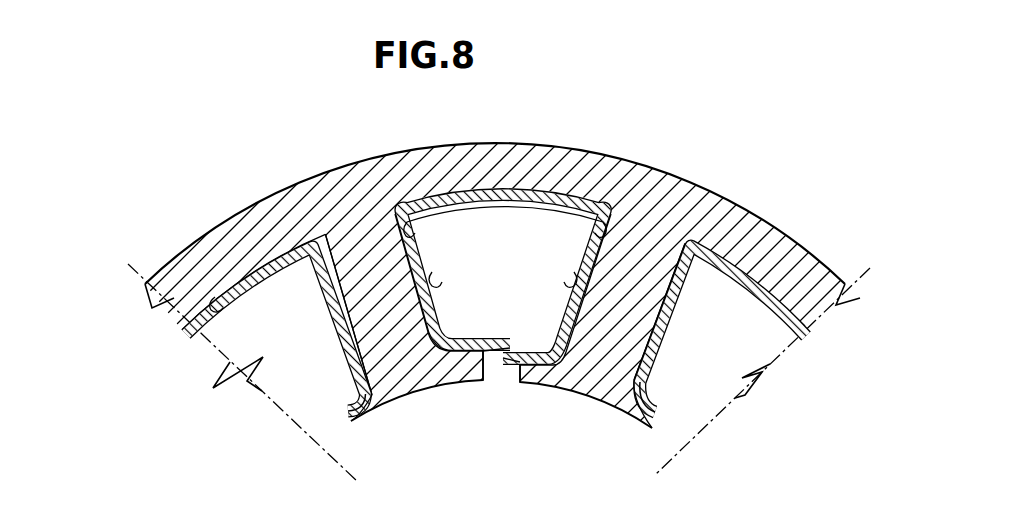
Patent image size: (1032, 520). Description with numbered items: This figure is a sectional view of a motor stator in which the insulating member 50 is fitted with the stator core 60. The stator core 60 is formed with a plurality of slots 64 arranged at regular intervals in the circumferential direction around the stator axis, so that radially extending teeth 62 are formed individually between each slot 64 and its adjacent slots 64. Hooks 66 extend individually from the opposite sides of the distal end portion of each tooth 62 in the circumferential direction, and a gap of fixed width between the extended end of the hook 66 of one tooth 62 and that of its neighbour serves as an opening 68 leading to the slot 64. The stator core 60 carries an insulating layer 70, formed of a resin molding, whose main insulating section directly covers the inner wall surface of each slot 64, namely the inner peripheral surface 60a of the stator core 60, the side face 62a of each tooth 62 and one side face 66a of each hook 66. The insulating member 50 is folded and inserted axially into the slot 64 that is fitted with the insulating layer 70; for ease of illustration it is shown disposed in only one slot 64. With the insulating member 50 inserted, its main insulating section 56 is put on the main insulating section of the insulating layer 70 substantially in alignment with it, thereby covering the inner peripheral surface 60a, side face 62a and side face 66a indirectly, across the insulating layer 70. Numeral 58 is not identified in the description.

The insulating member 50 is at (452, 222).
The main insulating section 56 is at (508, 224).
The slot 58 is at (478, 338).
The stator core 60 is at (700, 186).
The inner peripheral surface 60a is at (195, 316).
The teeth 62 is at (390, 330).
The side face 62a is at (338, 322).
The slots 64 is at (282, 287).
The hooks 66 is at (355, 423).
The side face 66a is at (342, 405).
The opening 68 is at (500, 390).
The insulating layer 70 is at (563, 185).